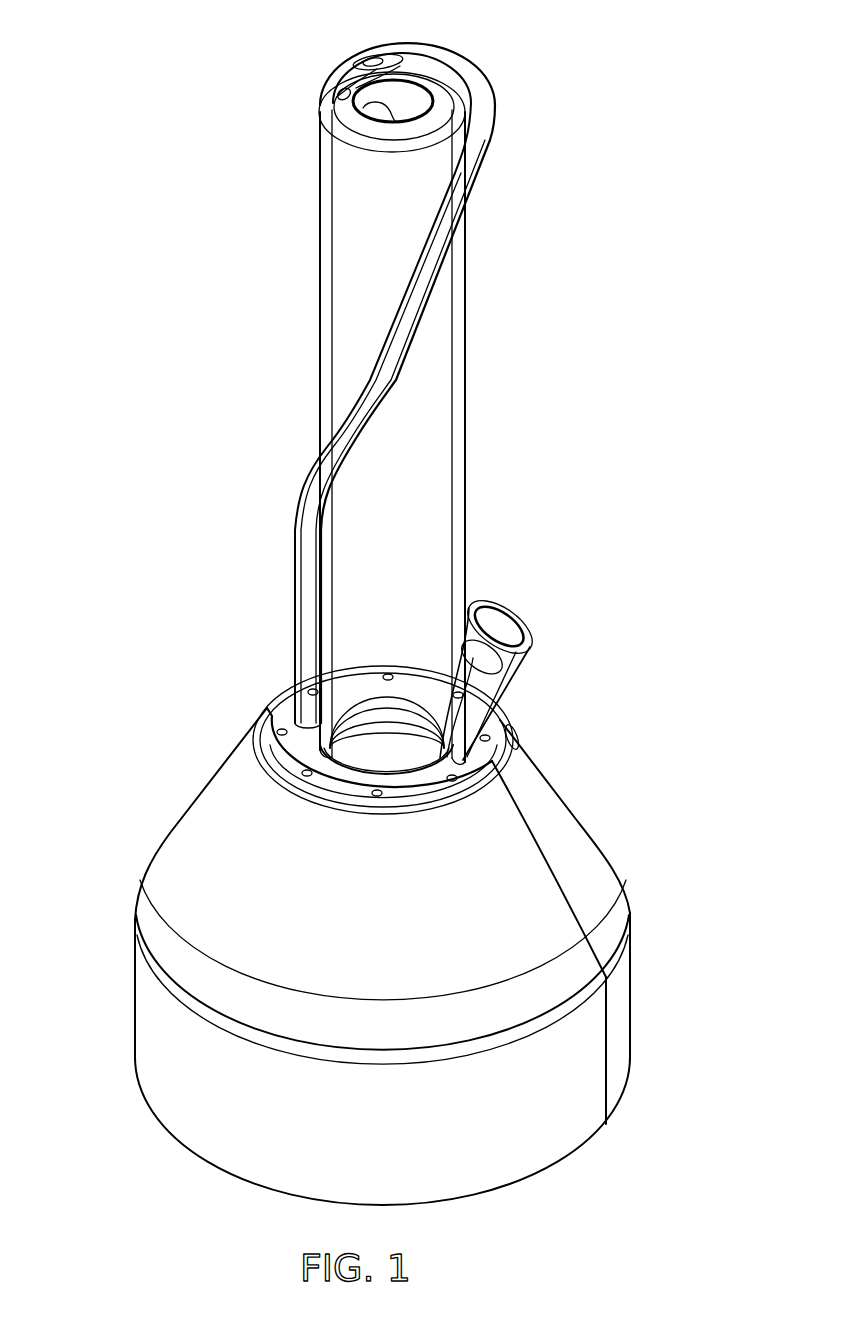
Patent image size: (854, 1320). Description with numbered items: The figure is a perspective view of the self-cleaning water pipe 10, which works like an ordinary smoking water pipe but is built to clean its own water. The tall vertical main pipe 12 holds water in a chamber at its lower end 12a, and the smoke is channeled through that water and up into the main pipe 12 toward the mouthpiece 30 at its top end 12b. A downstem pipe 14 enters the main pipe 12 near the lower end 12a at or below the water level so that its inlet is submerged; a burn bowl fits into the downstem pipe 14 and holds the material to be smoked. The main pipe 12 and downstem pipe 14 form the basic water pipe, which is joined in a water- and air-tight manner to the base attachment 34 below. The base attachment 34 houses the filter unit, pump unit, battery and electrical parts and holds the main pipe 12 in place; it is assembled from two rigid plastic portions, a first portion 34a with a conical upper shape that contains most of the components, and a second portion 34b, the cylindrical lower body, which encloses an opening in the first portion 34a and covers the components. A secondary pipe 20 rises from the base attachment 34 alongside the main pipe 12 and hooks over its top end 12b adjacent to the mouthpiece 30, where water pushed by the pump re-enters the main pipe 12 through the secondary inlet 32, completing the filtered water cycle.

The self-cleaning water pipe 10 is at (359, 608).
The main pipe 12 is at (372, 387).
The lower end of the main pipe 12a is at (283, 672).
The top end of the main pipe 12b is at (500, 63).
The downstem pipe 14 is at (507, 676).
The secondary pipe 20 is at (299, 497).
The mouthpiece 30 is at (378, 108).
The secondary inlet 32 is at (380, 63).
The base attachment 34 is at (359, 935).
The first portion of the base attachment 34a is at (573, 815).
The second portion of the base attachment 34b is at (148, 1040).